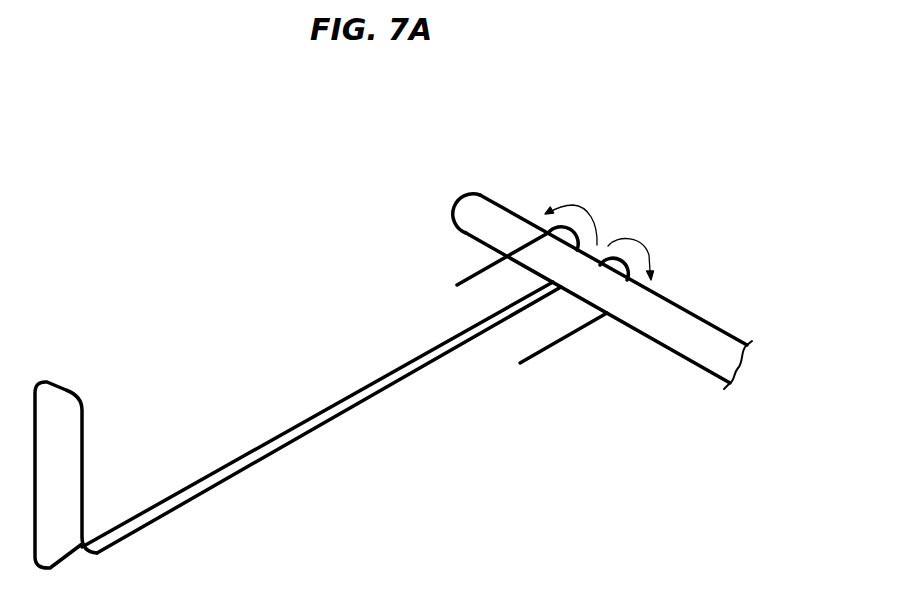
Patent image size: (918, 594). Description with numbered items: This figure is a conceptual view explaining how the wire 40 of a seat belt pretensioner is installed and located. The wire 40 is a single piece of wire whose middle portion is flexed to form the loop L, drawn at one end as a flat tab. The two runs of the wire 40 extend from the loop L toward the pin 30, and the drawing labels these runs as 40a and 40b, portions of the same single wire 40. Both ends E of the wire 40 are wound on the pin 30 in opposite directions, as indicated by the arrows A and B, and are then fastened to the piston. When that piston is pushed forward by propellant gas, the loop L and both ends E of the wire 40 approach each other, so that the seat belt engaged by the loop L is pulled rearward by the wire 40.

The pin 30 is at (677, 325).
The wire 40 is at (355, 382).
The hanger strip upper portion 40a is at (393, 383).
The hanger strip lower portion 40b is at (320, 413).
The loop L is at (58, 382).
The ends of the wire E is at (457, 285).
The arrow A is at (571, 209).
The arrow B is at (631, 246).